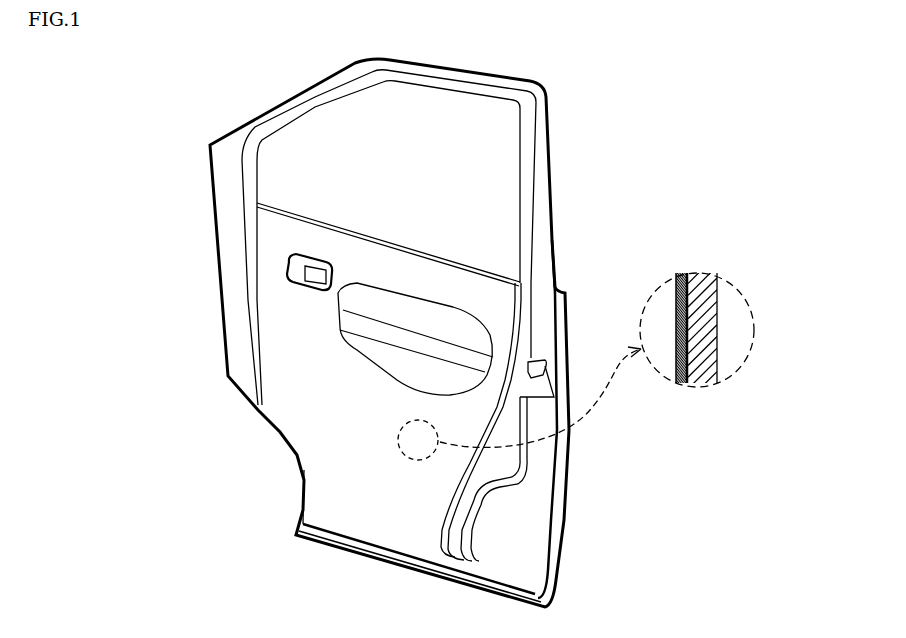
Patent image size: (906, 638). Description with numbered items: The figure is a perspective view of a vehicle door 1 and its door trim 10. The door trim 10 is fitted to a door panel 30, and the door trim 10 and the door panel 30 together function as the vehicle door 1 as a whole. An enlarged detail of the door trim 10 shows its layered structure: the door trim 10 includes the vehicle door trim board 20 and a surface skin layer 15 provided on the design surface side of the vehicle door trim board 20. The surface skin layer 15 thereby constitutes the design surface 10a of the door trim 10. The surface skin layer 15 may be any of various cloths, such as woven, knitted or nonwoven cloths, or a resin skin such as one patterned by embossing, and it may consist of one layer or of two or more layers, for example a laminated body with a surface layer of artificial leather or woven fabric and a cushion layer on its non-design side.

The vehicle door 1 is at (563, 137).
The door trim 10 is at (474, 290).
The design surface 10a is at (303, 437).
The surface skin layer 15 is at (677, 273).
The vehicle door trim board 20 is at (700, 273).
The door panel 30 is at (573, 490).